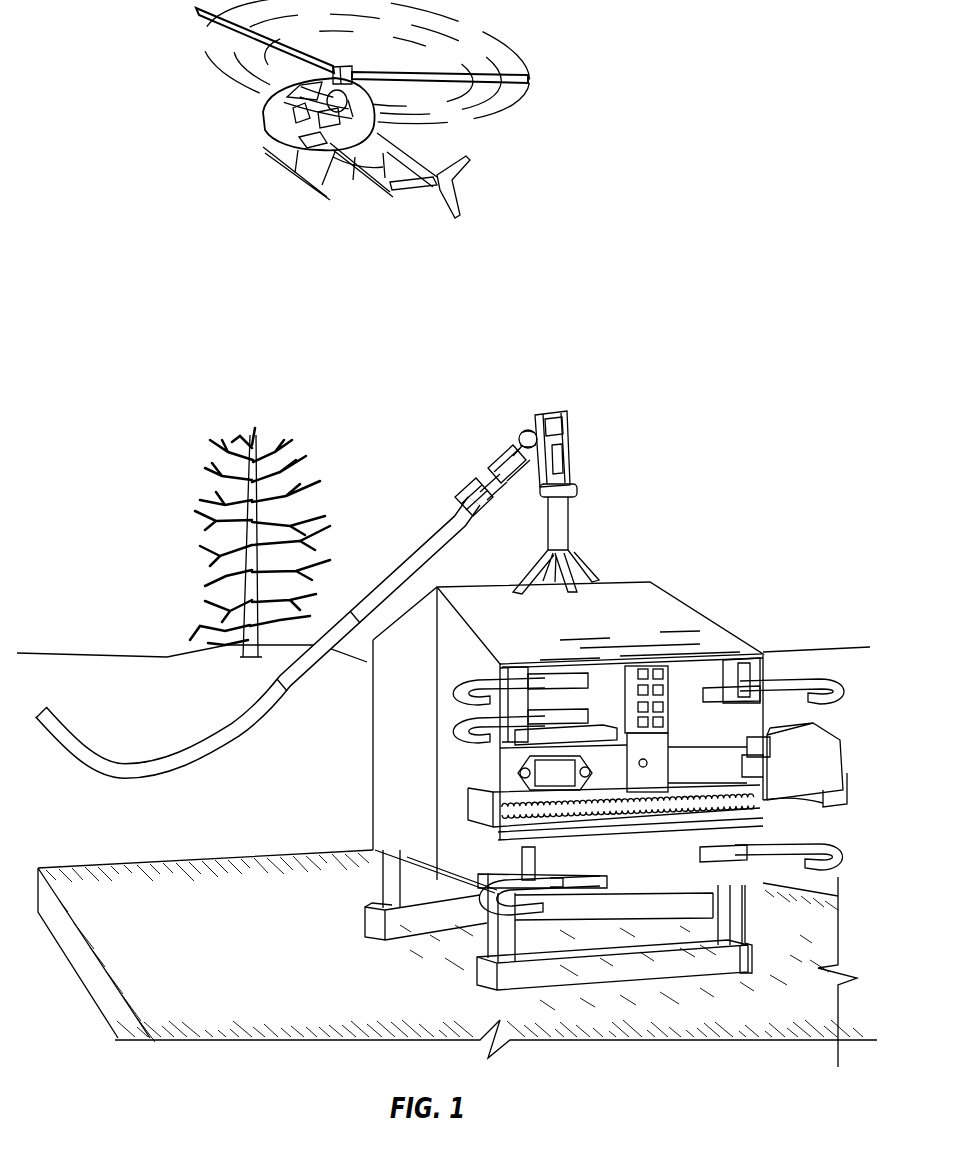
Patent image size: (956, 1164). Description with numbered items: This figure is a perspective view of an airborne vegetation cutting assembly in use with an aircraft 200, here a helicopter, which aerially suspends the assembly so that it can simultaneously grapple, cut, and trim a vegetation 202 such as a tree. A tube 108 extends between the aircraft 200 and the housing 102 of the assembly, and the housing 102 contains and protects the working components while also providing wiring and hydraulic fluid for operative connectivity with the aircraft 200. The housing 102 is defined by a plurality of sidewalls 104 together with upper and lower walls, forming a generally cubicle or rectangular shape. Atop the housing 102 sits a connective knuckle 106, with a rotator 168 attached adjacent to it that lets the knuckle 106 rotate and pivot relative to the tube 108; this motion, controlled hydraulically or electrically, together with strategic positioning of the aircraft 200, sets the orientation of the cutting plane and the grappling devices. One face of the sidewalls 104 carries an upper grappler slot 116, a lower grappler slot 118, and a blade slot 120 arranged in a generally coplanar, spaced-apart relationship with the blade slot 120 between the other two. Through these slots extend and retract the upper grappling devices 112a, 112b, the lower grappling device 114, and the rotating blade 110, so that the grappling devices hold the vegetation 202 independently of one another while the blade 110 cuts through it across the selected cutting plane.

The aircraft 200 is at (200, 84).
The vegetation 202 is at (227, 468).
The tube 108 is at (238, 717).
The rotator 168 is at (520, 431).
The knuckle 106 is at (572, 448).
The sidewalls 104 is at (553, 638).
The upper grappler slot 116 is at (745, 660).
The upper grappling device 112a is at (752, 683).
The upper grappling device 112b is at (457, 742).
The blade slot 120 is at (683, 775).
The rotating blade 110 is at (702, 797).
The housing 102 is at (372, 820).
The lower grappling device 114 is at (543, 883).
The lower grappler slot 118 is at (590, 882).